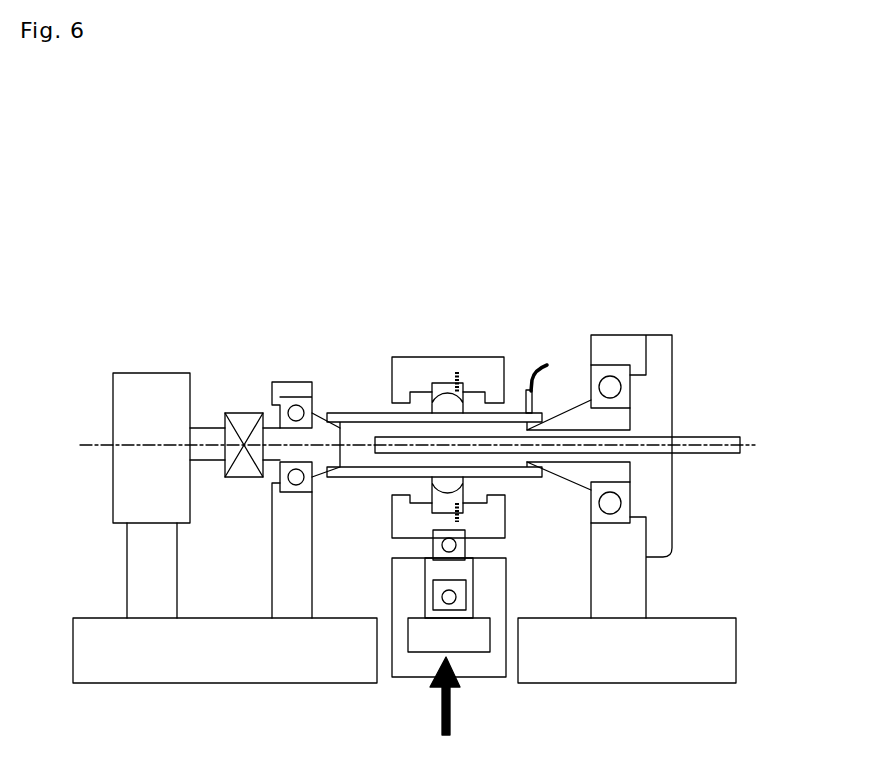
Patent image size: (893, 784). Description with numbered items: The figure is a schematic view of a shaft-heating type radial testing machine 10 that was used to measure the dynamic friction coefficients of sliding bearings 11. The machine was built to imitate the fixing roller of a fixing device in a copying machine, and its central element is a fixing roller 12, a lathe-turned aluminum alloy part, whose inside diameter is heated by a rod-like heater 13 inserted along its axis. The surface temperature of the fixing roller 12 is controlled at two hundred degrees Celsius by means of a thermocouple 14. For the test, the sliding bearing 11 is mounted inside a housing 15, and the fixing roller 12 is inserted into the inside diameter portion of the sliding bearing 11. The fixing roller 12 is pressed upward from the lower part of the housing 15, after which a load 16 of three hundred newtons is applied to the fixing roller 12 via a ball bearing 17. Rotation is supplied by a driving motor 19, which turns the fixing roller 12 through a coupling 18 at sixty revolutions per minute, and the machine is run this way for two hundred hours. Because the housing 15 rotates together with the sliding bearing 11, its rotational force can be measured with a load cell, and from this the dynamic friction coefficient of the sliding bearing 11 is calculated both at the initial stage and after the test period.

The shaft-heating type radial testing machine 10 is at (677, 295).
The sliding bearing 11 is at (438, 385).
The fixing roller 12 is at (350, 413).
The rod-like heater 13 is at (688, 438).
The thermocouple 14 is at (533, 384).
The housing 15 is at (472, 365).
The load 16 is at (452, 718).
The ball bearing 17 is at (458, 550).
The coupling 18 is at (238, 412).
The driving motor 19 is at (127, 377).